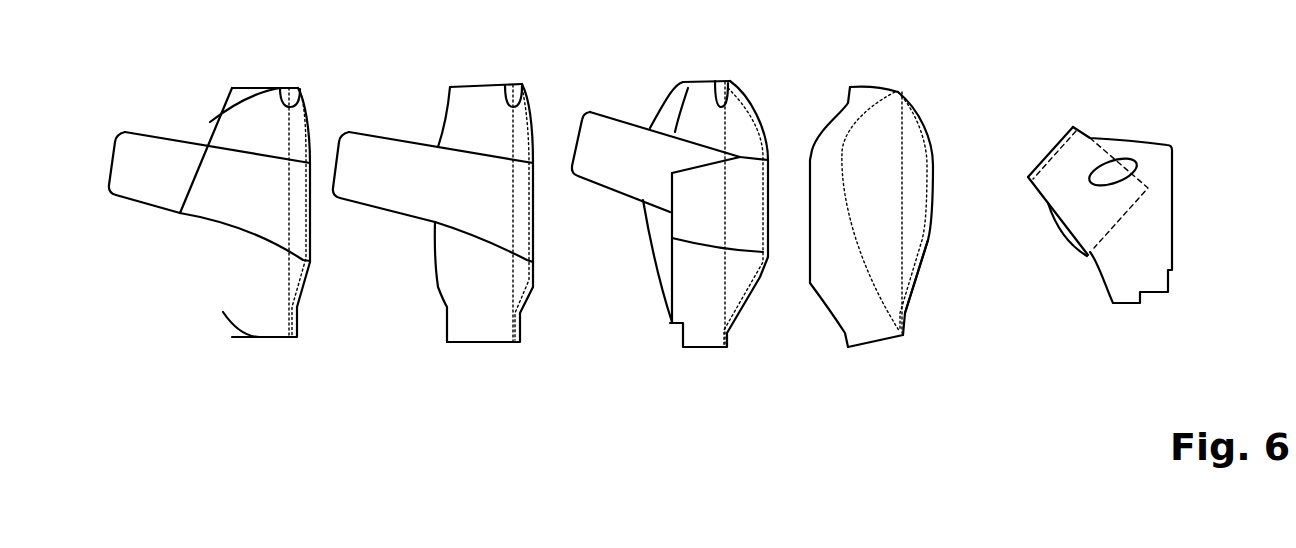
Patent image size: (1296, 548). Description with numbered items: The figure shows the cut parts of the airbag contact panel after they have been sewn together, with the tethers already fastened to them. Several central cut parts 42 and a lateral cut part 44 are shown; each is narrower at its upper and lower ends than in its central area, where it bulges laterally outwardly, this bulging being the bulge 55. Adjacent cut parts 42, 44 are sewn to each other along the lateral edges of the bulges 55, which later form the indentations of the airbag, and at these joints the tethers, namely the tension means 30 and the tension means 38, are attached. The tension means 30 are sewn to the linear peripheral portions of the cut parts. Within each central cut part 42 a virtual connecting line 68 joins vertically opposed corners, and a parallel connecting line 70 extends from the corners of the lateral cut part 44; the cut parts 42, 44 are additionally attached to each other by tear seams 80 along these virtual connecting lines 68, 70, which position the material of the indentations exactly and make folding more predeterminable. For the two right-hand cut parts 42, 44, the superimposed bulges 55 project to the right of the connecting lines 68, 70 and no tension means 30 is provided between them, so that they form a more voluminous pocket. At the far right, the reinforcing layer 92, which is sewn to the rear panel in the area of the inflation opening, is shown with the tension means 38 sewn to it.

The tension means 30 is at (160, 150).
The tension means 38 is at (685, 219).
The central cut part 42 is at (233, 340).
The lateral cut part 44 is at (215, 270).
The bulge 55 is at (917, 138).
The virtual connecting line 68 is at (905, 290).
The connecting line 70 is at (905, 290).
The tear seam 80 is at (283, 88).
The reinforcing layer 92 is at (1158, 167).